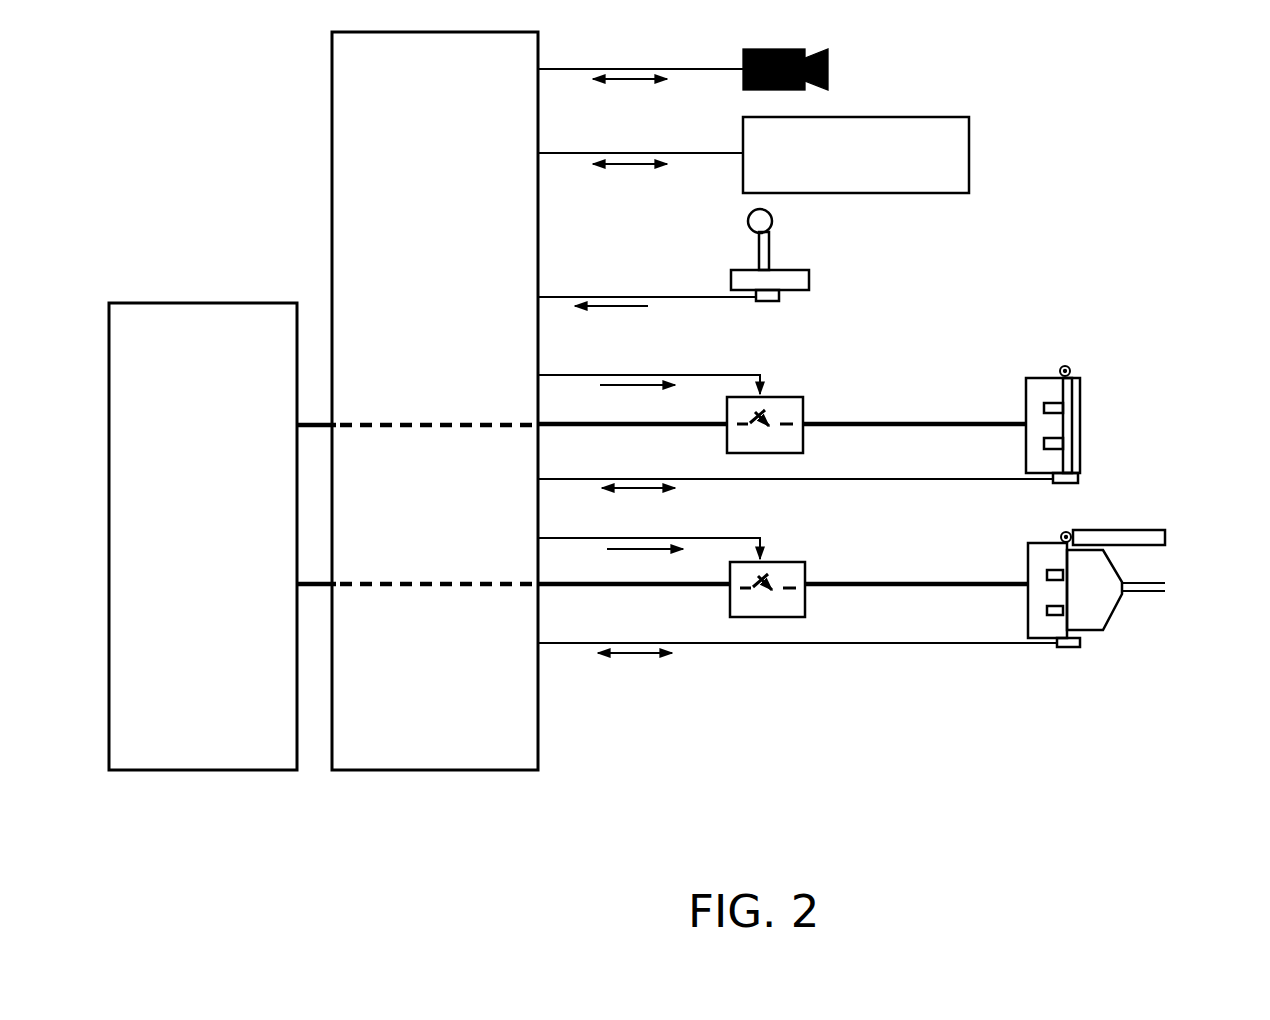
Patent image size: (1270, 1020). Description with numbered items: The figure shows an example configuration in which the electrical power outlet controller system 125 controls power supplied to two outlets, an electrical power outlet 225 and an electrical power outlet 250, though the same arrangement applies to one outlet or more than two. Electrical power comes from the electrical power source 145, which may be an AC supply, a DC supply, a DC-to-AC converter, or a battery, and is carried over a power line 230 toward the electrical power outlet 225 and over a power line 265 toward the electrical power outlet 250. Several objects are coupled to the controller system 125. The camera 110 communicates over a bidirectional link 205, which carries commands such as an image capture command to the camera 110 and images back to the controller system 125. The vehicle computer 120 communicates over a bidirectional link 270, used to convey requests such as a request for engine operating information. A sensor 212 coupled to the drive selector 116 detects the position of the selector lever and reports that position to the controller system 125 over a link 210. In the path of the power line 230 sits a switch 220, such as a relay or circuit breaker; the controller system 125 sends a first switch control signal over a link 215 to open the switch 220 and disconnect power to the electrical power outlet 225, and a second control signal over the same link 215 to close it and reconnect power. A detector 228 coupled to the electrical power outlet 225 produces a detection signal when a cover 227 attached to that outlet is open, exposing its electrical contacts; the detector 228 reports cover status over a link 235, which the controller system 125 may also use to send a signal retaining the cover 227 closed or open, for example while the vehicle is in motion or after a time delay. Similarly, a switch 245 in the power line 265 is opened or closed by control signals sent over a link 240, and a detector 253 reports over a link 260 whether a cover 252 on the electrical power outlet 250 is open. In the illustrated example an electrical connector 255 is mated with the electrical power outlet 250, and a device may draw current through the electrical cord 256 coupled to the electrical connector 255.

The camera 110 is at (790, 50).
The drive selector 116 is at (812, 252).
The vehicle computer 120 is at (959, 146).
The electrical power outlet controller system 125 is at (520, 68).
The electrical power source 145 is at (288, 336).
The bidirectional link 205 is at (630, 70).
The link 210 is at (598, 297).
The sensor 212 is at (767, 302).
The link 215 is at (553, 375).
The switch 220 is at (787, 397).
The electrical power outlet 225 is at (1100, 374).
The cover 227 is at (1082, 421).
The detector 228 is at (1062, 485).
The power line 230 is at (568, 427).
The link 235 is at (703, 481).
The link 240 is at (556, 538).
The switch 245 is at (787, 562).
The electrical power outlet 250 is at (1174, 506).
The cover 252 is at (1168, 536).
The detector 253 is at (1068, 650).
The electrical connector 255 is at (1120, 614).
The electrical cord 256 is at (1155, 594).
The link 260 is at (748, 645).
The power line 265 is at (600, 588).
The bidirectional link 270 is at (630, 153).